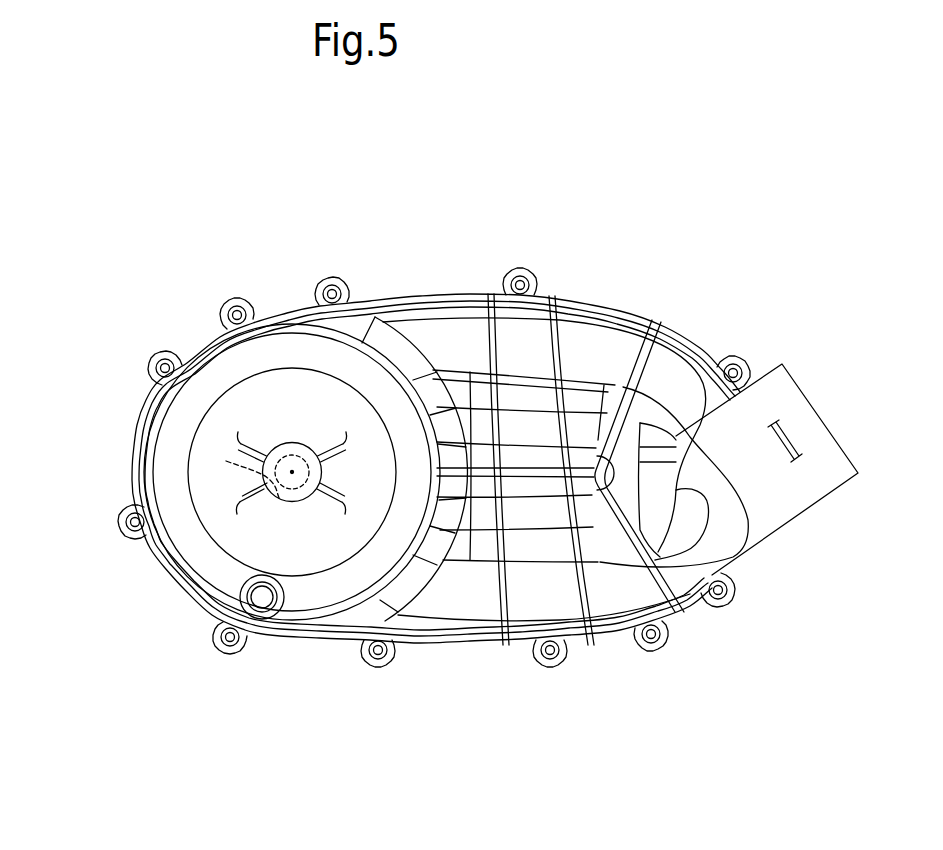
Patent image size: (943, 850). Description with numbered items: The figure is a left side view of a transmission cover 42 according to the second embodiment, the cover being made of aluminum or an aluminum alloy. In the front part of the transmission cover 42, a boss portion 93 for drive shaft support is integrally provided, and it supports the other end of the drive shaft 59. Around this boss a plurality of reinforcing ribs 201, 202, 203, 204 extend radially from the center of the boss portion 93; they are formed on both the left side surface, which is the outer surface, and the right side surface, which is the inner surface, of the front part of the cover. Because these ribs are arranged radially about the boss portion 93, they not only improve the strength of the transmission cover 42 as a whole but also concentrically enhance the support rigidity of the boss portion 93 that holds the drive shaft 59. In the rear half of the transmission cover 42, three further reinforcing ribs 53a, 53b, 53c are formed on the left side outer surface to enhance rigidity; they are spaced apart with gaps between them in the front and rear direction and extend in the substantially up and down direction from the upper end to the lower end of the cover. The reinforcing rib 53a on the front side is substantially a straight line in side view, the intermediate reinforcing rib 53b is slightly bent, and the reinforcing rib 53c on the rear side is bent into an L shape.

The transmission cover 42 is at (433, 305).
The reinforcing rib 53a is at (495, 600).
The reinforcing rib 53b is at (556, 598).
The reinforcing rib 53c is at (637, 641).
The drive shaft 59 is at (237, 473).
The boss portion 93 is at (280, 492).
The reinforcing rib 201 is at (252, 443).
The reinforcing rib 202 is at (336, 443).
The reinforcing rib 203 is at (330, 502).
The reinforcing rib 204 is at (278, 500).